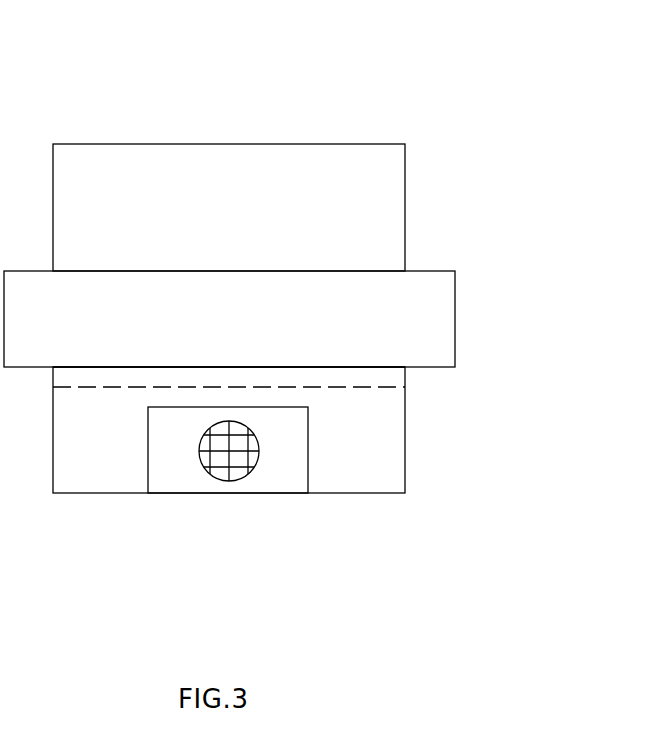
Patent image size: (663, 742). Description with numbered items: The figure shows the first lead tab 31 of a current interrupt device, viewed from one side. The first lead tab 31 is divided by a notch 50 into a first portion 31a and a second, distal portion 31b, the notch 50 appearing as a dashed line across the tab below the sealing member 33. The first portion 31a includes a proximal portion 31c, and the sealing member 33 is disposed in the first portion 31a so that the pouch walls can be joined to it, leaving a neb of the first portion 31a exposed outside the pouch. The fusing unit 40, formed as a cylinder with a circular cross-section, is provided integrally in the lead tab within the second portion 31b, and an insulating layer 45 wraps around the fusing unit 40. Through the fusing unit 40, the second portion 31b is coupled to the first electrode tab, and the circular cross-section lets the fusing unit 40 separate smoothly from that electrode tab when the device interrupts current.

The first lead tab 31 is at (305, 297).
The first portion 31a is at (397, 205).
The second portion 31b is at (393, 459).
The proximal portion 31c is at (393, 376).
The sealing member 33 is at (443, 320).
The fusing unit 40 is at (218, 468).
The insulating layer 45 is at (278, 478).
The notch 50 is at (363, 388).